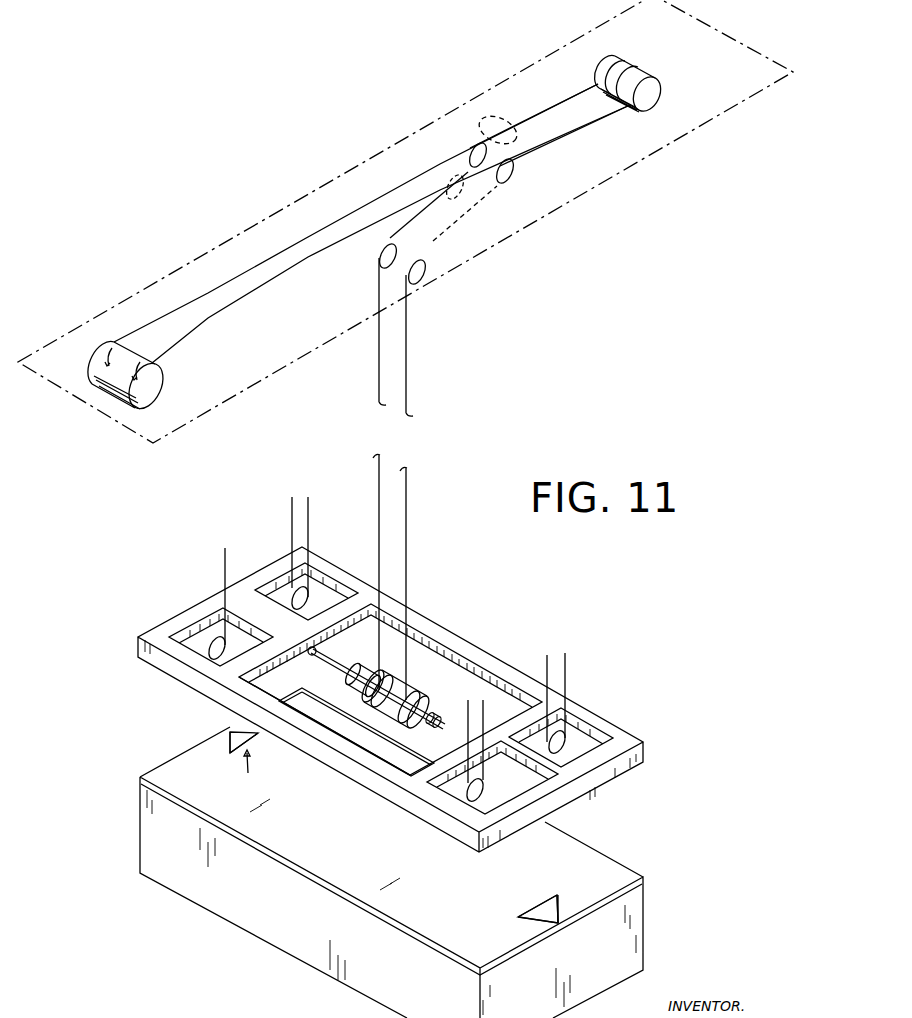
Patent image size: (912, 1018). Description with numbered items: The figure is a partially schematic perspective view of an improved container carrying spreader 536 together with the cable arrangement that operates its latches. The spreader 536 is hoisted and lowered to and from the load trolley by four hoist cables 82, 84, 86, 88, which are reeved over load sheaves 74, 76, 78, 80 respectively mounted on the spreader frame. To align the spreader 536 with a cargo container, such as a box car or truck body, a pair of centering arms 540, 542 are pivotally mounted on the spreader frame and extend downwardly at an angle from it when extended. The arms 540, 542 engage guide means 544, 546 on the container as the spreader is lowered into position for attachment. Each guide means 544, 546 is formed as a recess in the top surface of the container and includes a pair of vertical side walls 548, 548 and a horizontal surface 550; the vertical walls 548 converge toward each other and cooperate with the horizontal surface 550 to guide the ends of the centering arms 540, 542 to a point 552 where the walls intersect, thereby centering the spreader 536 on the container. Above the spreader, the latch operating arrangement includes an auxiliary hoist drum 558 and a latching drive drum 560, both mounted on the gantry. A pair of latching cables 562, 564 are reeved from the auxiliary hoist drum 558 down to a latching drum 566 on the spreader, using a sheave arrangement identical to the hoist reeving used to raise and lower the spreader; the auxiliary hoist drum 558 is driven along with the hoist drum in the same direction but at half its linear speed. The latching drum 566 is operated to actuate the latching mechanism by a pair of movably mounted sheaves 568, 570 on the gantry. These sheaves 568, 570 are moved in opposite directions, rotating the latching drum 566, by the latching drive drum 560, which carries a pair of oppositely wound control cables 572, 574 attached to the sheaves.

The load sheave 74 is at (580, 727).
The load sheave 76 is at (447, 813).
The load sheave 78 is at (306, 598).
The load sheave 80 is at (207, 652).
The hoist cable 82 is at (567, 662).
The hoist cable 84 is at (466, 719).
The hoist cable 86 is at (292, 522).
The hoist cable 88 is at (212, 571).
The container carrying spreader 536 is at (483, 654).
The centering arm 540 is at (547, 831).
The centering arm 542 is at (223, 668).
The guide means 544 is at (530, 900).
The guide means 546 is at (252, 772).
The vertical side wall 548 is at (255, 736).
The horizontal surface 550 is at (238, 742).
The point 552 is at (230, 734).
The auxiliary hoist drum 558 is at (162, 371).
The latching drive drum 560 is at (663, 85).
The latching cable 562 is at (258, 267).
The latching cable 564 is at (281, 276).
The latching drum 566 is at (406, 700).
The movably mounted sheave 568 is at (477, 149).
The movably mounted sheave 570 is at (507, 183).
The control cable 572 is at (557, 100).
The control cable 574 is at (603, 116).